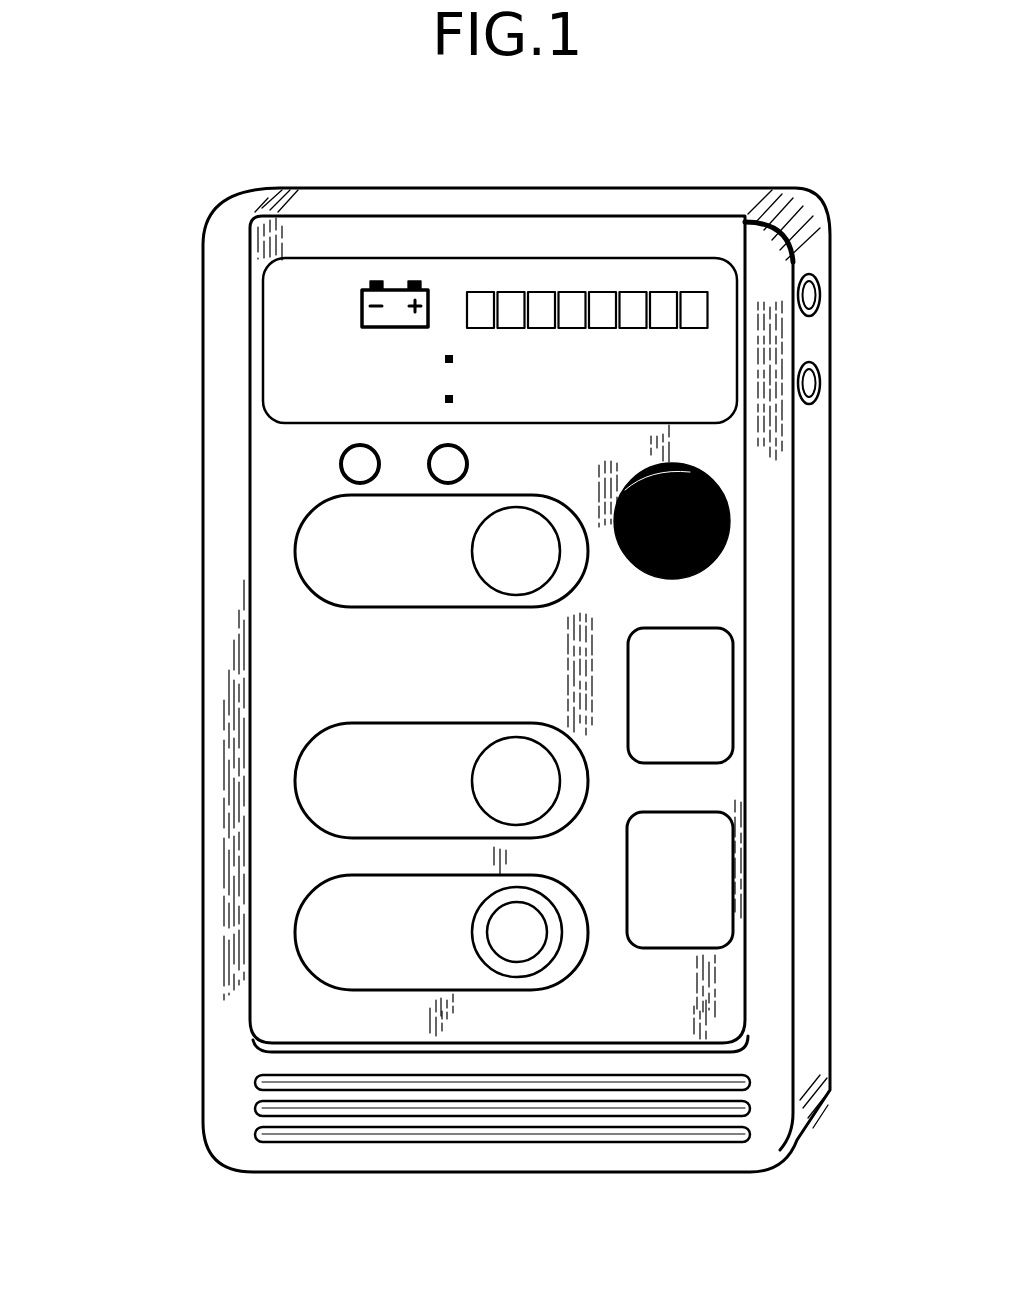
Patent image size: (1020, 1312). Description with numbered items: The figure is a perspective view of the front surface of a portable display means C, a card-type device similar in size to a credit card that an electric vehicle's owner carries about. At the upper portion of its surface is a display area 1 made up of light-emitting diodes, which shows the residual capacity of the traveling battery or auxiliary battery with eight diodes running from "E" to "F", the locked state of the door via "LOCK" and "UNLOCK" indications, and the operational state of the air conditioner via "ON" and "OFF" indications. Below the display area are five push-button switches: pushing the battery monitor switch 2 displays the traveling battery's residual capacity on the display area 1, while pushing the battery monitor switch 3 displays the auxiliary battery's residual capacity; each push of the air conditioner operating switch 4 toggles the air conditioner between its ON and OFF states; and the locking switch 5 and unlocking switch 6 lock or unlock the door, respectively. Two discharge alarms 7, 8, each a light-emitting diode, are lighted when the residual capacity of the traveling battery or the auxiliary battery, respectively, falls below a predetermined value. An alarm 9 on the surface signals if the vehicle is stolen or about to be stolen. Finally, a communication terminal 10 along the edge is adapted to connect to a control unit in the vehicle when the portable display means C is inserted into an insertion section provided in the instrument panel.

The portable display means C is at (190, 588).
The display area 1 is at (457, 262).
The battery monitor switch 2 is at (715, 698).
The battery monitor switch 3 is at (717, 877).
The air conditioner operating switch 4 is at (383, 594).
The locking switch 5 is at (329, 751).
The unlocking switch 6 is at (332, 901).
The discharge alarm 7 is at (340, 465).
The discharge alarm 8 is at (467, 464).
The alarm 9 is at (634, 474).
The communication terminal 10 is at (811, 379).